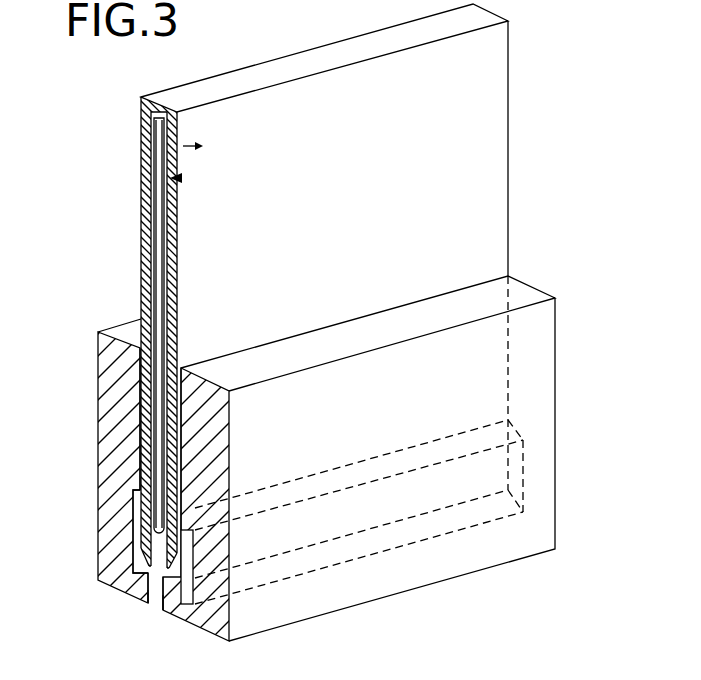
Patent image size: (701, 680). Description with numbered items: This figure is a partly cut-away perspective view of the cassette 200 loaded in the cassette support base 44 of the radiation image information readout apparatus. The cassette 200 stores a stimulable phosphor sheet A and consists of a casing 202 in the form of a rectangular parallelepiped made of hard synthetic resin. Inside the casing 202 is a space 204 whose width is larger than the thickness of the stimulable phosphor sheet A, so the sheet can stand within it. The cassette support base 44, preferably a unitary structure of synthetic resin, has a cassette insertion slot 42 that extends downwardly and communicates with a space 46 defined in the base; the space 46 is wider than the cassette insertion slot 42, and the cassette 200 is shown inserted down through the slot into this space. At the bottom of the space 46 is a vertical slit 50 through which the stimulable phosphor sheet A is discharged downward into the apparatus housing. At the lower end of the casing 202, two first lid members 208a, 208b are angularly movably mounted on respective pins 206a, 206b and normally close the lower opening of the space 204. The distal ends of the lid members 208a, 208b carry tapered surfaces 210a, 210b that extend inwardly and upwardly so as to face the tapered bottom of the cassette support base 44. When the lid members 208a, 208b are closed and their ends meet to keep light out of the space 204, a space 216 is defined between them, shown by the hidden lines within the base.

The cassette 200 is at (183, 145).
The stimulable phosphor sheet A is at (170, 178).
The casing 202 is at (466, 193).
The space 204 is at (147, 231).
The cassette insertion slot 42 is at (182, 367).
The cassette support base 44 is at (114, 391).
The space 46 is at (133, 524).
The vertical slit 50 is at (153, 598).
The pin 206a is at (145, 497).
The pin 206b is at (185, 487).
The first lid member 208a is at (148, 556).
The first lid member 208b is at (190, 519).
The tapered surface 210a is at (143, 594).
The tapered surface 210b is at (188, 603).
The space 216 is at (191, 498).